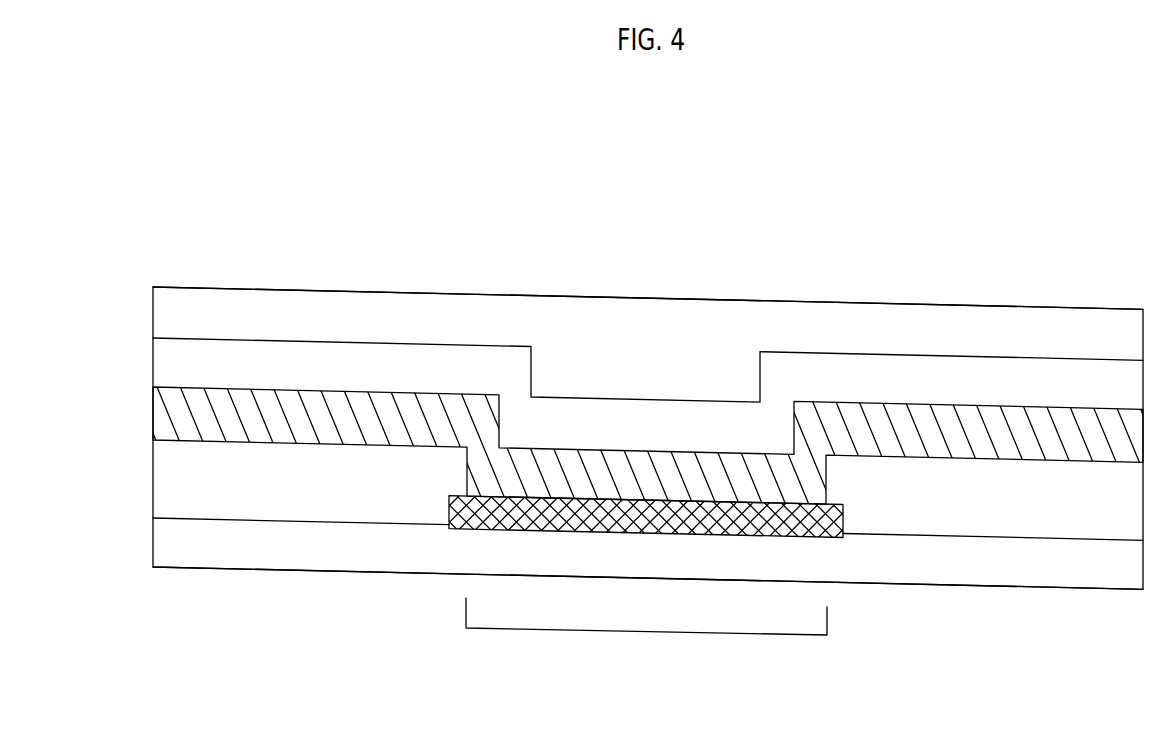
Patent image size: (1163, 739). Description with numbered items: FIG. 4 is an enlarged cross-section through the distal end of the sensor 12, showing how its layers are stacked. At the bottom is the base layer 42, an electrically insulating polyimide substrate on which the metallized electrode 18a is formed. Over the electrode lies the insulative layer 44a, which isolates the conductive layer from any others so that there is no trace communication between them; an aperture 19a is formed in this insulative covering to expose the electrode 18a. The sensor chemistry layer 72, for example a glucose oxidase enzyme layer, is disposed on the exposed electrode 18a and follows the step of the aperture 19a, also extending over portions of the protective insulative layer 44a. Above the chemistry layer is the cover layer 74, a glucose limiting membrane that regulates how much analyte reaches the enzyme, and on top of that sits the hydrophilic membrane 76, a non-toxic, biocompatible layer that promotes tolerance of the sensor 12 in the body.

The sensor 12 is at (242, 230).
The hydrophilic membrane 76 is at (153, 300).
The cover layer 74 is at (153, 356).
The sensor chemistry layer 72 is at (153, 402).
The insulative layer 44a is at (153, 463).
The base layer 42 is at (153, 531).
The electrode 18a is at (482, 517).
The aperture 19a is at (646, 630).